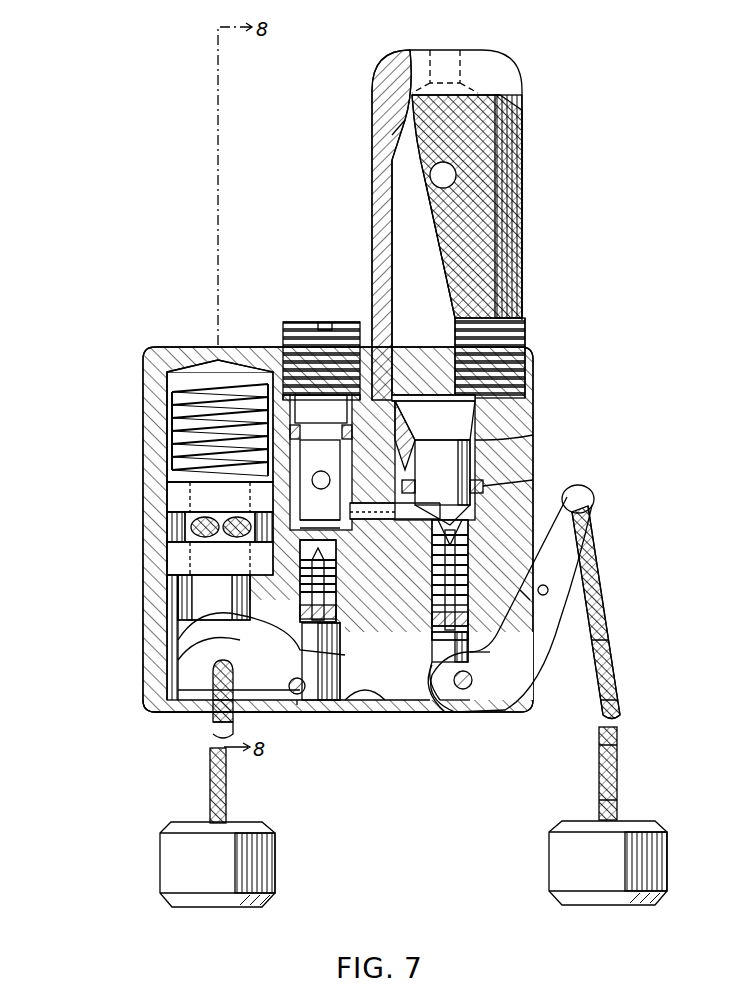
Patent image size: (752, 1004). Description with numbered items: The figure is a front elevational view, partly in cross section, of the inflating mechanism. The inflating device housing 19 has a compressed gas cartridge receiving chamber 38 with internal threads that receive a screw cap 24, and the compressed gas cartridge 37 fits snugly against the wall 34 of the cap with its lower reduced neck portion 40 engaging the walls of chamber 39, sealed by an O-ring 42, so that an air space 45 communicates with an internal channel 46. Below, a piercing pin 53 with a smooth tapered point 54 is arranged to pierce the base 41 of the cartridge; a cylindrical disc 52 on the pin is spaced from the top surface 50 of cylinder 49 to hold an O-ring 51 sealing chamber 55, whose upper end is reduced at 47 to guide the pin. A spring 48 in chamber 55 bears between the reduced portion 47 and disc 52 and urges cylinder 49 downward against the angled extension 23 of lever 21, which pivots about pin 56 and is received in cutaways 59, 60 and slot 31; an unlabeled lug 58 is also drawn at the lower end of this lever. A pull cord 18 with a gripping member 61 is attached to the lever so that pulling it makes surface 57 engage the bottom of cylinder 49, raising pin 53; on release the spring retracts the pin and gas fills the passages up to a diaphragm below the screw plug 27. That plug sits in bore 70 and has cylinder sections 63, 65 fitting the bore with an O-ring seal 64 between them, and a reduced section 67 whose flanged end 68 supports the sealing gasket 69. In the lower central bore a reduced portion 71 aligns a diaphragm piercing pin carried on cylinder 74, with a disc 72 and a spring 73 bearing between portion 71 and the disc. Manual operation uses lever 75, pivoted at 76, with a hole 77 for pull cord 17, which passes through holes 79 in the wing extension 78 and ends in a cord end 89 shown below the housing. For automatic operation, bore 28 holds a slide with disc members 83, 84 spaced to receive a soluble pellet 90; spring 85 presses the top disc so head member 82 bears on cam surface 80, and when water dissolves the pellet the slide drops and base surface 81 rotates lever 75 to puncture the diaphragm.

The pull cord 17 is at (210, 792).
The pull cord 18 is at (615, 790).
The inflating device housing 19 is at (533, 410).
The lever 21 is at (575, 602).
The angled extension 23 is at (495, 690).
The screw cap 24 is at (522, 180).
The screw plug 27 is at (310, 322).
The bore 28 is at (166, 373).
The slot 31 is at (370, 712).
The wall of screw cap 34 is at (395, 125).
The compressed gas cartridge 37 is at (398, 240).
The compressed gas cartridge receiving chamber 38 is at (398, 425).
The chamber 39 is at (430, 452).
The lower reduced neck portion 40 is at (533, 440).
The base of compressed gas cartridge 41 is at (487, 485).
The O-ring 42 is at (523, 470).
The air space 45 is at (530, 492).
The internal channel 46 is at (425, 515).
The reduced diameter portion 47 is at (466, 521).
The spring 48 is at (445, 556).
The cylinder 49 is at (432, 645).
The top surface of cylinder 50 is at (436, 628).
The O-ring 51 is at (430, 600).
The cylindrical disc 52 is at (468, 605).
The piercing pin 53 is at (468, 546).
The tapered point 54 is at (442, 482).
The chamber 55 is at (468, 566).
The pin 56 is at (472, 675).
The surface of lever 57 is at (430, 664).
The lug 58 is at (462, 708).
The cutaway 59 is at (510, 605).
The cutaway 60 is at (492, 650).
The gripping member 61 is at (560, 865).
The cylinder section 63 is at (292, 360).
The O-ring seal 64 is at (356, 450).
The cylinder section 65 is at (312, 430).
The cylinder section of reduced diameter 67 is at (372, 486).
The flanged end 68 is at (372, 526).
The sealing gasket 69 is at (338, 551).
The bore 70 is at (320, 395).
The reduced diameter portion 71 is at (312, 545).
The disc 72 is at (336, 610).
The spring 73 is at (336, 580).
The cylinder 74 is at (318, 700).
The lever 75 is at (372, 712).
The pivot 76 is at (297, 705).
The hole 77 is at (200, 662).
The wing extension 78 is at (165, 700).
The holes 79 is at (232, 676).
The cam surface 80 is at (178, 640).
The base surface 81 is at (205, 618).
The head member 82 is at (200, 590).
The disc member 83 is at (180, 558).
The disc member 84 is at (178, 497).
The spring 85 is at (178, 440).
The cable end 89 is at (175, 725).
The soluble pellet 90 is at (183, 527).